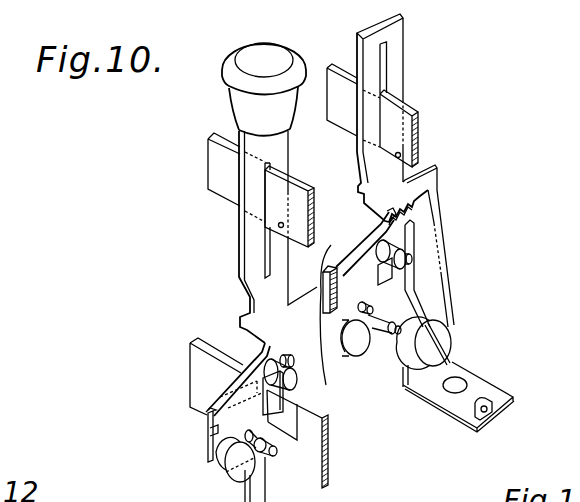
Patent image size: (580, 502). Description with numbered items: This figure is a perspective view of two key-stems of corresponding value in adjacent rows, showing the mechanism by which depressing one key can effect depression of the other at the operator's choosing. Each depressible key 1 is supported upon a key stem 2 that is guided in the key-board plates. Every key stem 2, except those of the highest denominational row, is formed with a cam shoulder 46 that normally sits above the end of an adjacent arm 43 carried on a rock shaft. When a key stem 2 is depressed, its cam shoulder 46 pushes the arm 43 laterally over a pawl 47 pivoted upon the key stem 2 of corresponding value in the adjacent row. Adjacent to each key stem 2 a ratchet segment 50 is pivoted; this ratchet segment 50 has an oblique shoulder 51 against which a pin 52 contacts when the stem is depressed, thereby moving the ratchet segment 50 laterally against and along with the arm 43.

The depressible key 1 is at (265, 49).
The key stem 2 is at (260, 148).
The arm 43 is at (318, 248).
The cam shoulder 46 is at (438, 203).
The pawl 47 is at (345, 313).
The ratchet segment 50 is at (415, 210).
The oblique shoulder 51 is at (415, 281).
The pin 52 is at (413, 262).